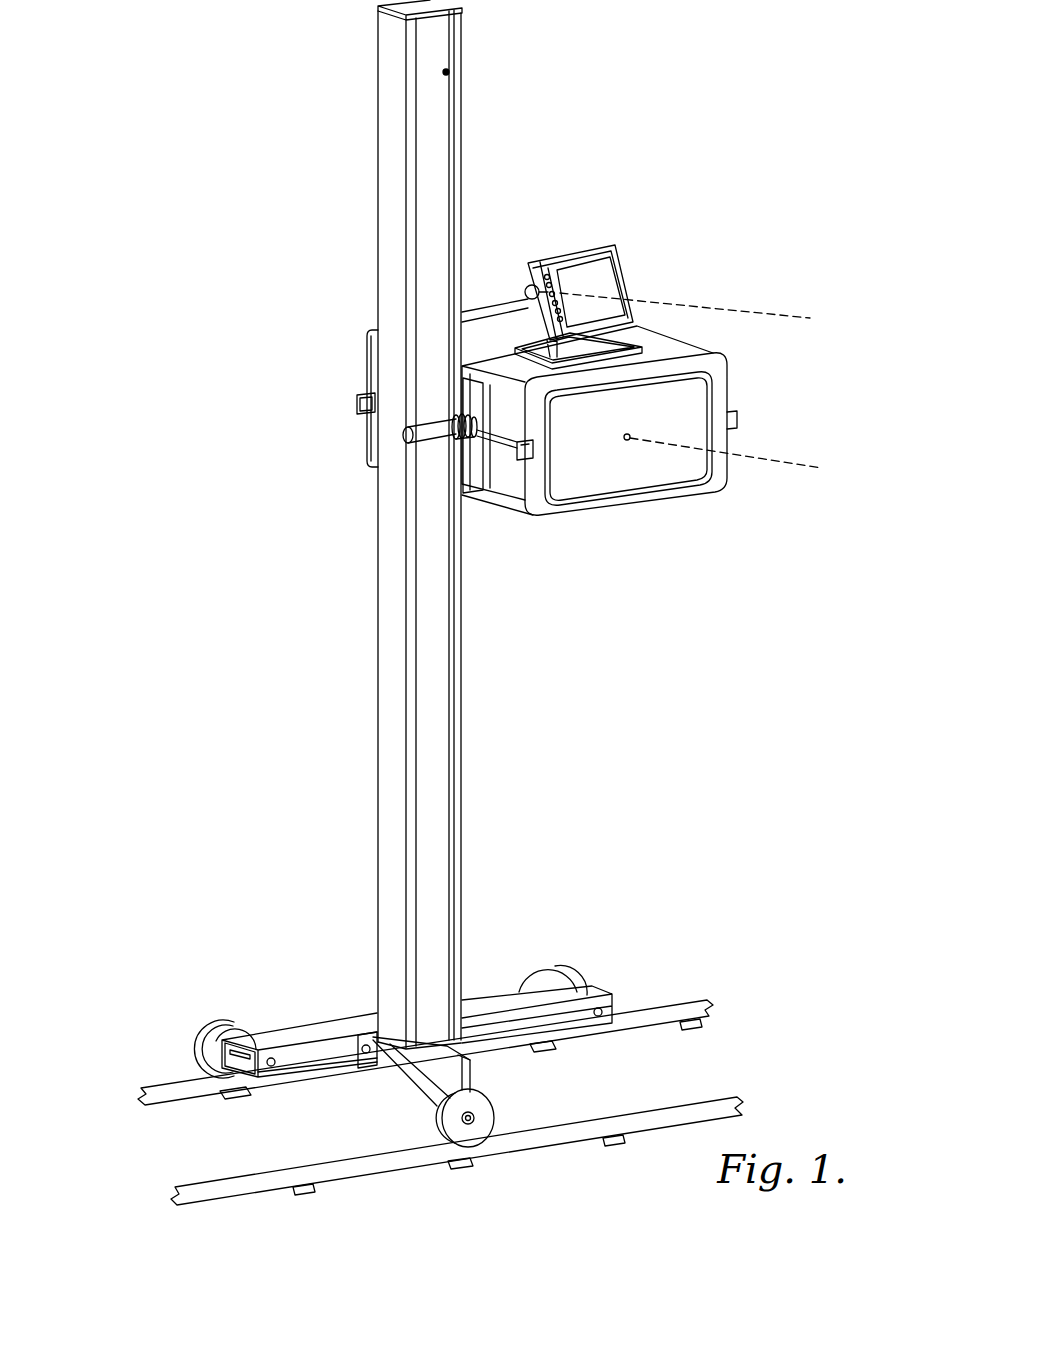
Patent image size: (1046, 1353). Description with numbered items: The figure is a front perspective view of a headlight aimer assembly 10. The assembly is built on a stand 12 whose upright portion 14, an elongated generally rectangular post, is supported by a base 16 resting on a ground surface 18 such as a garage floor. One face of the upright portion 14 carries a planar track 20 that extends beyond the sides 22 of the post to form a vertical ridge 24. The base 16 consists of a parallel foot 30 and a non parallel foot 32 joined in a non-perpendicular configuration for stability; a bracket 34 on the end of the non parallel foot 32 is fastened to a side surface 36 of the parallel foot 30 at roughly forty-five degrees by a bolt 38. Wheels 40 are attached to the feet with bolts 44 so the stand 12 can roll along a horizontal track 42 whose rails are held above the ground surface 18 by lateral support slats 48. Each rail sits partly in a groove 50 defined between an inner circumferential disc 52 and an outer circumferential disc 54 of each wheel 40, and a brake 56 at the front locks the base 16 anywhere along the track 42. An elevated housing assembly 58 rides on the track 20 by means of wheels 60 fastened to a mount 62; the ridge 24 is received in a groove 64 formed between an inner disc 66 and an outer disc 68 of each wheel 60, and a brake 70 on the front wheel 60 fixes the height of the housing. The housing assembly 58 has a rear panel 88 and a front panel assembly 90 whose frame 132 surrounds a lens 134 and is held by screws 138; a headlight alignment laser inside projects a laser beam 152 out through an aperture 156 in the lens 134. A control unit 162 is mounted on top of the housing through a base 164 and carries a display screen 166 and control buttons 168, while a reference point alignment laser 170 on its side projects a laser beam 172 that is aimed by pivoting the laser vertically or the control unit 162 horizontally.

The headlight aimer assembly 10 is at (700, 185).
The stand 12 is at (378, 655).
The upright portion 14 is at (387, 582).
The base 16 is at (323, 1015).
The ground surface 18 is at (800, 1030).
The track 20 is at (465, 107).
The sides 22 is at (427, 105).
The ridge 24 is at (460, 38).
The parallel foot 30 is at (307, 1030).
The non parallel foot 32 is at (422, 1115).
The bracket 34 is at (377, 1033).
The side surface 36 is at (332, 1065).
The bolt 38 is at (367, 1055).
The wheels 40 is at (197, 1027).
The track 42 is at (150, 1135).
The bolts 44 is at (271, 1068).
The lateral support slats 48 is at (230, 1099).
The groove 50 is at (200, 1057).
The inner circumferential disc 52 is at (238, 1030).
The outer circumferential disc 54 is at (222, 1020).
The brake 56 is at (475, 1062).
The housing assembly 58 is at (658, 336).
The wheels 60 is at (453, 415).
The mount 62 is at (468, 380).
The groove 64 is at (470, 445).
The inner disc 66 is at (478, 440).
The outer disc 68 is at (460, 440).
The brake 70 is at (404, 436).
The rear panel 88 is at (374, 445).
The front panel assembly 90 is at (730, 353).
The frame 132 is at (720, 373).
The lens 134 is at (667, 470).
The screw 138 is at (730, 424).
The laser beam 152 is at (760, 455).
The aperture 156 is at (627, 441).
The control unit 162 is at (594, 241).
The base 164 is at (593, 350).
The display screen 166 is at (612, 285).
The control buttons 168 is at (550, 270).
The reference point alignment laser 170 is at (528, 289).
The laser beam 172 is at (808, 316).